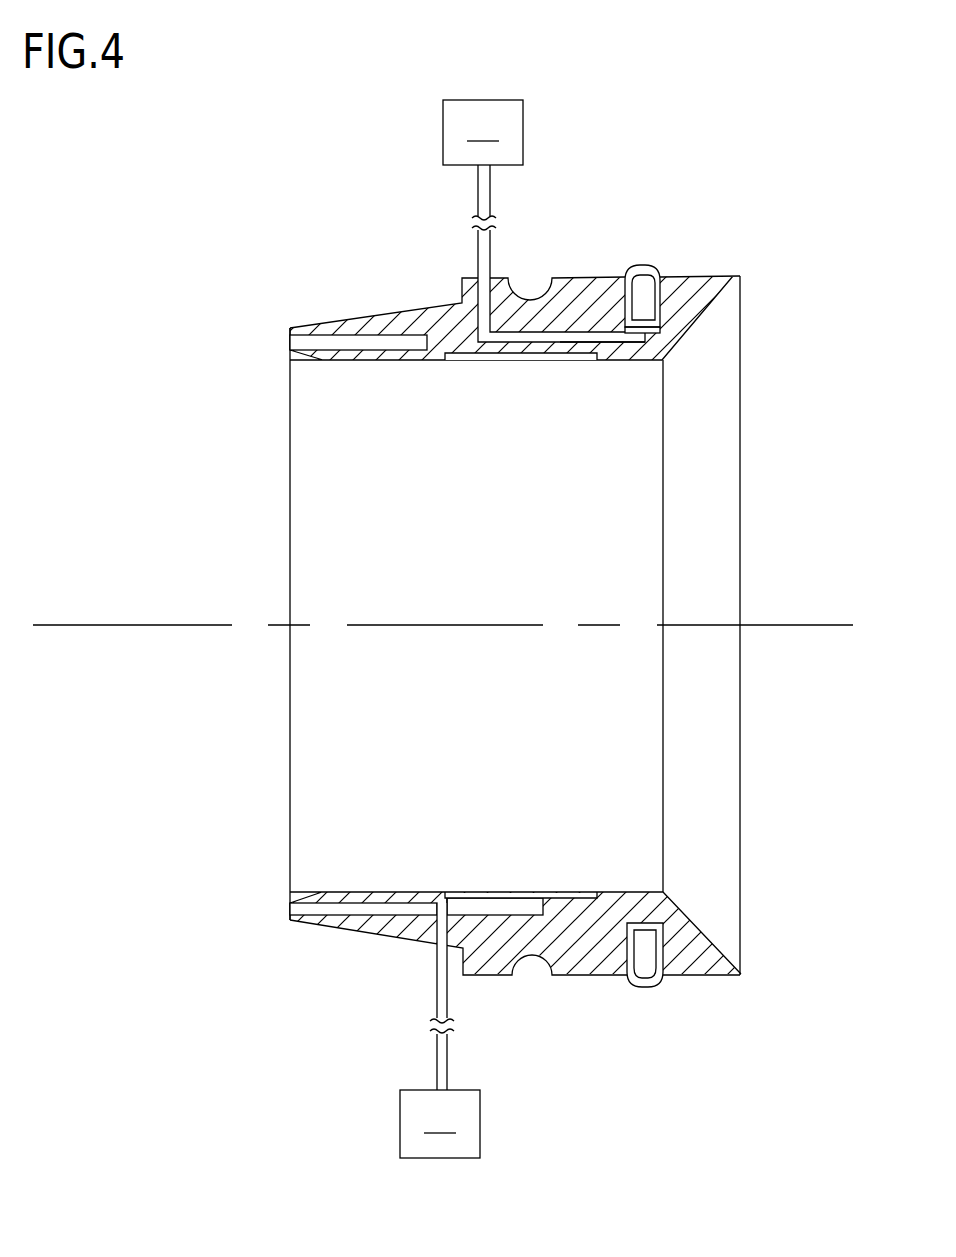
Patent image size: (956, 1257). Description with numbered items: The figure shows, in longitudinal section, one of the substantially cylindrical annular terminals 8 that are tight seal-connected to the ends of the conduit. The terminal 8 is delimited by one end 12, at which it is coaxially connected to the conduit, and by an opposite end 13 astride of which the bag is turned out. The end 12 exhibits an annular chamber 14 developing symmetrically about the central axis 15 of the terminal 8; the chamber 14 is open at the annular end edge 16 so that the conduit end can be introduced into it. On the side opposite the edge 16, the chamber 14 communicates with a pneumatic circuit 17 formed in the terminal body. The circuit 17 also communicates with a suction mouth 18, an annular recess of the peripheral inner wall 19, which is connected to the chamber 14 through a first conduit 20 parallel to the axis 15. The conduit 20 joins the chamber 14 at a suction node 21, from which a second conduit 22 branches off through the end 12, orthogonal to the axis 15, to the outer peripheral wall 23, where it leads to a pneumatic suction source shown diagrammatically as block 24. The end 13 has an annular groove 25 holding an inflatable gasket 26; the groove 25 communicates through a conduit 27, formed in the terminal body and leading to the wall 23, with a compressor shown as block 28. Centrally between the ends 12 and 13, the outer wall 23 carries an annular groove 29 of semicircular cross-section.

The annular terminal 8 is at (743, 990).
The end 12 is at (325, 925).
The opposite end 13 is at (691, 960).
The annular chamber 14 is at (376, 345).
The central axis 15 is at (197, 625).
The annular end edge 16 is at (288, 328).
The pneumatic circuit 17 is at (505, 918).
The suction mouth 18 is at (558, 358).
The peripheral inner wall 19 is at (635, 362).
The first conduit 20 is at (538, 896).
The suction node 21 is at (445, 918).
The second conduit 22 is at (443, 932).
The outer peripheral wall 23 is at (462, 276).
The pneumatic suction source 24 is at (440, 1124).
The annular groove 25 is at (690, 276).
The inflatable gasket 26 is at (643, 287).
The conduit 27 is at (577, 338).
The compressor 28 is at (483, 132).
The annular groove 29 is at (537, 955).